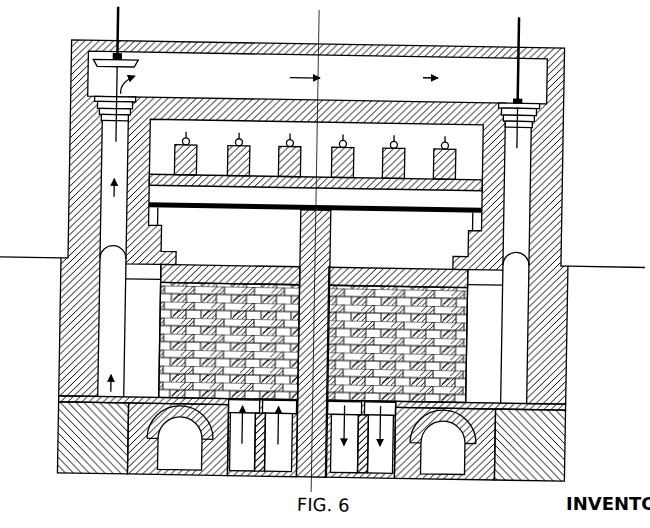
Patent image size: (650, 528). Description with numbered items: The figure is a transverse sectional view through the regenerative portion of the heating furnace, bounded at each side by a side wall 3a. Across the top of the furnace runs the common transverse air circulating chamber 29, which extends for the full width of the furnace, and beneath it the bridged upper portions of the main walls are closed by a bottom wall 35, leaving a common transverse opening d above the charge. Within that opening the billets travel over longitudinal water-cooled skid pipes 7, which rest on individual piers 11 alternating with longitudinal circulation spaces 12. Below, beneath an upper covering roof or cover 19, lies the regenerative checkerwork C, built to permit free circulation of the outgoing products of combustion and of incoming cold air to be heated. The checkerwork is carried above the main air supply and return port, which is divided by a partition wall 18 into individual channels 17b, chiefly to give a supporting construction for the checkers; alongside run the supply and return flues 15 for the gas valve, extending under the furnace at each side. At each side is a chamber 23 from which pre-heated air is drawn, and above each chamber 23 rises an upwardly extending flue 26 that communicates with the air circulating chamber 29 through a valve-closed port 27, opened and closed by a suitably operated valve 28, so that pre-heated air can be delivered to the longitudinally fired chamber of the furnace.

The valve 28 is at (90, 67).
The valve-closed port 27 is at (69, 111).
The side wall 3a is at (68, 152).
The upwardly extending flue 26 is at (109, 214).
The air circulating chamber 29 is at (286, 73).
The bottom wall 35 is at (375, 109).
The pier 11 is at (230, 149).
The circulation space 12 is at (261, 166).
The transverse opening d is at (313, 251).
The skid pipe 7 is at (443, 149).
The checkerwork C is at (213, 301).
The upper covering roof 19 is at (330, 274).
The chamber 23 is at (313, 333).
The supply and return flue 15 is at (311, 441).
The individual channel 17b is at (244, 456).
The partition wall 18 is at (263, 456).